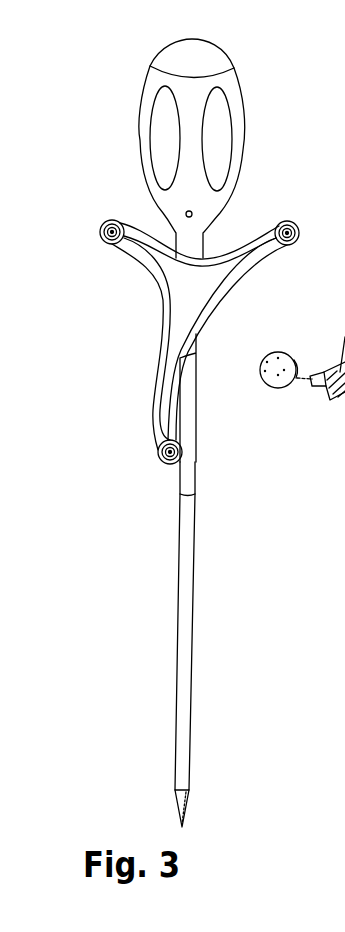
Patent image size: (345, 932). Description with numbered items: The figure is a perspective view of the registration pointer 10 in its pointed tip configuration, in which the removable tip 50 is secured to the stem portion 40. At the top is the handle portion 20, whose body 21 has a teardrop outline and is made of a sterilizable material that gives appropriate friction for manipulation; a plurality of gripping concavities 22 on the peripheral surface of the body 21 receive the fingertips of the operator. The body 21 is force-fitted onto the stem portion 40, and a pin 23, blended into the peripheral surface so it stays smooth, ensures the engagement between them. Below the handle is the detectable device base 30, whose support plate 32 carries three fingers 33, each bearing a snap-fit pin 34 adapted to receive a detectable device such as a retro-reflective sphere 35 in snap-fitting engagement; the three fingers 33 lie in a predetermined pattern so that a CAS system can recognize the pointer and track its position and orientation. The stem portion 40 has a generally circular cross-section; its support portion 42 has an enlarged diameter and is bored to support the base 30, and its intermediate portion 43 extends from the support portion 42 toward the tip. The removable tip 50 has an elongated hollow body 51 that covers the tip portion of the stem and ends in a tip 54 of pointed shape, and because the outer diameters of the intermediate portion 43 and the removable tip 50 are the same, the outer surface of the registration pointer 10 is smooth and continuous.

The registration pointer 10 is at (108, 750).
The handle portion 20 is at (113, 137).
The body 21 is at (243, 147).
The gripping concavities 22 is at (168, 113).
The pin 23 is at (193, 213).
The detectable device base 30 is at (145, 300).
The support plate 32 is at (213, 303).
The fingers 33 is at (147, 245).
The snap-fit pin 34 is at (292, 228).
The retro-reflective sphere 35 is at (278, 388).
The stem portion 40 is at (155, 484).
The support portion 42 is at (200, 331).
The intermediate portion 43 is at (193, 478).
The removable tip 50 is at (159, 594).
The elongated hollow body 51 is at (183, 720).
The tip 54 is at (182, 827).